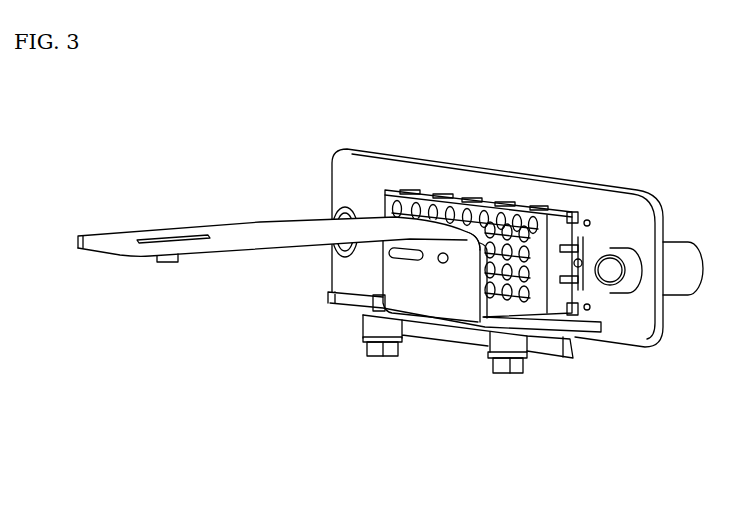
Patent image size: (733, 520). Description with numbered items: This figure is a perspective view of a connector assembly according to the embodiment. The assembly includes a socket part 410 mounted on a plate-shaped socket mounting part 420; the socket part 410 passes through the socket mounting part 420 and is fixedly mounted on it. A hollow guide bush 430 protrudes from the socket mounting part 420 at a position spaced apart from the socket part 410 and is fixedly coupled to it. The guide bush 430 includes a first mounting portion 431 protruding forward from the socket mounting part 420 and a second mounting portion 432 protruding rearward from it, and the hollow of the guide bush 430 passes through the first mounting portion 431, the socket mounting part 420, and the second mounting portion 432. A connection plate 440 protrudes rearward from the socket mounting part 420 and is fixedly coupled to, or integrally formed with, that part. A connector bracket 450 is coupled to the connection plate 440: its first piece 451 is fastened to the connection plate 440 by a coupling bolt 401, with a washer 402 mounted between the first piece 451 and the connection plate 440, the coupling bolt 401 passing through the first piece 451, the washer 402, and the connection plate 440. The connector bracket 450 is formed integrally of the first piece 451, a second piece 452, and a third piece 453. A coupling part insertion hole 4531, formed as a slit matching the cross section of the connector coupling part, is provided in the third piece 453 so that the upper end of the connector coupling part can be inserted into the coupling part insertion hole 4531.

The coupling bolt 401 is at (375, 357).
The washer 402 is at (475, 330).
The socket part 410 is at (482, 195).
The socket mounting part 420 is at (380, 167).
The guide bush 430 is at (484, 285).
The first mounting portion 431 is at (682, 284).
The second mounting portion 432 is at (350, 210).
The connection plate 440 is at (432, 338).
The connector bracket 450 is at (335, 288).
The first piece 451 is at (358, 308).
The second piece 452 is at (400, 277).
The third piece 453 is at (275, 232).
The coupling part insertion hole 4531 is at (167, 242).